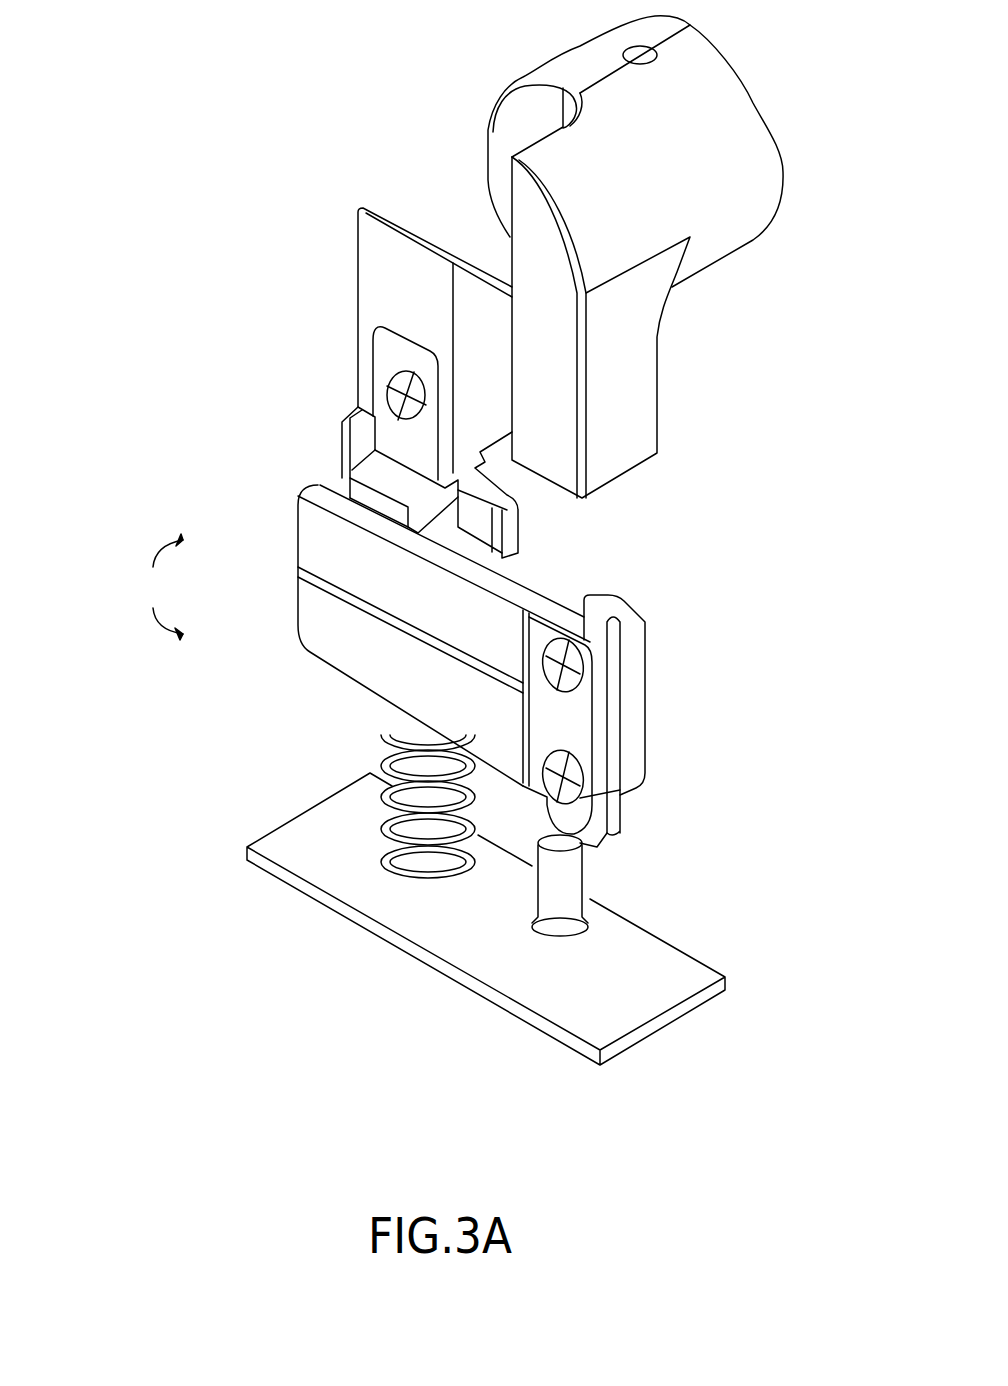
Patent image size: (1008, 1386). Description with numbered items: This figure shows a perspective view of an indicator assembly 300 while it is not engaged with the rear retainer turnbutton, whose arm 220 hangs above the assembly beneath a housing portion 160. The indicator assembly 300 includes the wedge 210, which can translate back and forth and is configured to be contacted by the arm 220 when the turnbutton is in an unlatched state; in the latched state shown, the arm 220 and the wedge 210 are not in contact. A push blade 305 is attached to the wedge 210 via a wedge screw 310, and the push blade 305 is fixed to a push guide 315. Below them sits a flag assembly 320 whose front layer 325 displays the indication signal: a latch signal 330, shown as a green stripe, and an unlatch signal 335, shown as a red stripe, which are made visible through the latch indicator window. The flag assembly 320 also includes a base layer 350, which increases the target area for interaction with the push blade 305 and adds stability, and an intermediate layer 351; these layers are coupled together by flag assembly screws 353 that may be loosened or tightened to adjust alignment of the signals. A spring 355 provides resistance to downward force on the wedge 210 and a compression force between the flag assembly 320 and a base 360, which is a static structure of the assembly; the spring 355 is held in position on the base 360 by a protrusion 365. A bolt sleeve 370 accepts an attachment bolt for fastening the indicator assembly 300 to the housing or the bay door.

The housing cap 160 is at (703, 107).
The arm 220 is at (647, 335).
The wedge 210 is at (388, 265).
The wedge screw 310 is at (395, 378).
The push blade 305 is at (392, 440).
The push guide 315 is at (533, 530).
The indicator assembly 300 is at (140, 200).
The flag assembly 320 is at (158, 587).
The unlatch signal 335 is at (392, 577).
The latch signal 330 is at (392, 668).
The front layer 325 is at (582, 718).
The flag assembly screws 353 is at (582, 660).
The base layer 350 is at (628, 627).
The intermediate layer 351 is at (618, 818).
The spring 355 is at (390, 718).
The protrusion 365 is at (420, 865).
The bolt sleeve 370 is at (555, 893).
The base 360 is at (612, 990).